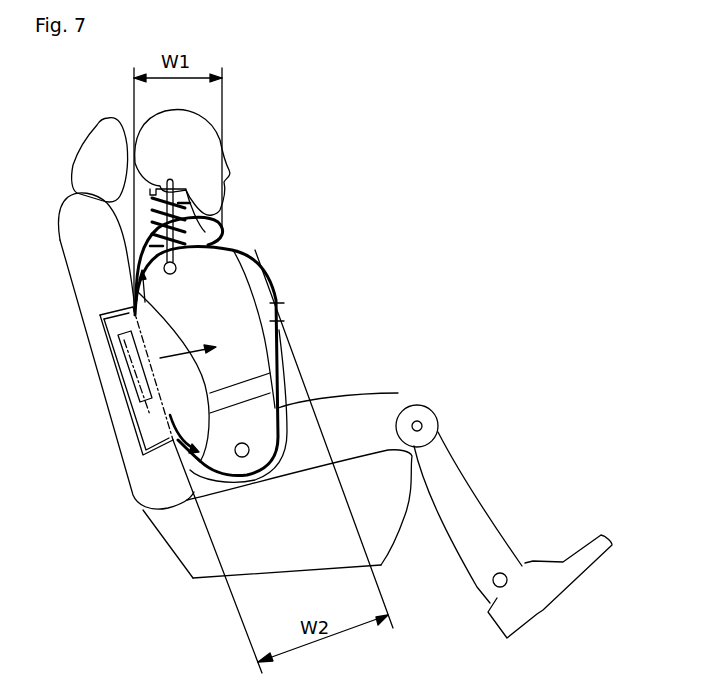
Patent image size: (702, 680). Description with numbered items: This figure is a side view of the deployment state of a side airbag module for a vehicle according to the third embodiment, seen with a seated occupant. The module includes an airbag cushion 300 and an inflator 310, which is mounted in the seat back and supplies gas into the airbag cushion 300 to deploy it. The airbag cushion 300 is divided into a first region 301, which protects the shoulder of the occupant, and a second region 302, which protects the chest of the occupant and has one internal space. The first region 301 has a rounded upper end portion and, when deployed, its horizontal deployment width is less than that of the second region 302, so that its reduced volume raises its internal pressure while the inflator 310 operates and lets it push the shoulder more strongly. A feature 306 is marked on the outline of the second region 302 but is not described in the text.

The airbag cushion 300 is at (256, 329).
The first region 301 is at (230, 240).
The second region 302 is at (238, 295).
The tether / seam of airbag cushion 306 is at (277, 311).
The inflator 310 is at (134, 383).